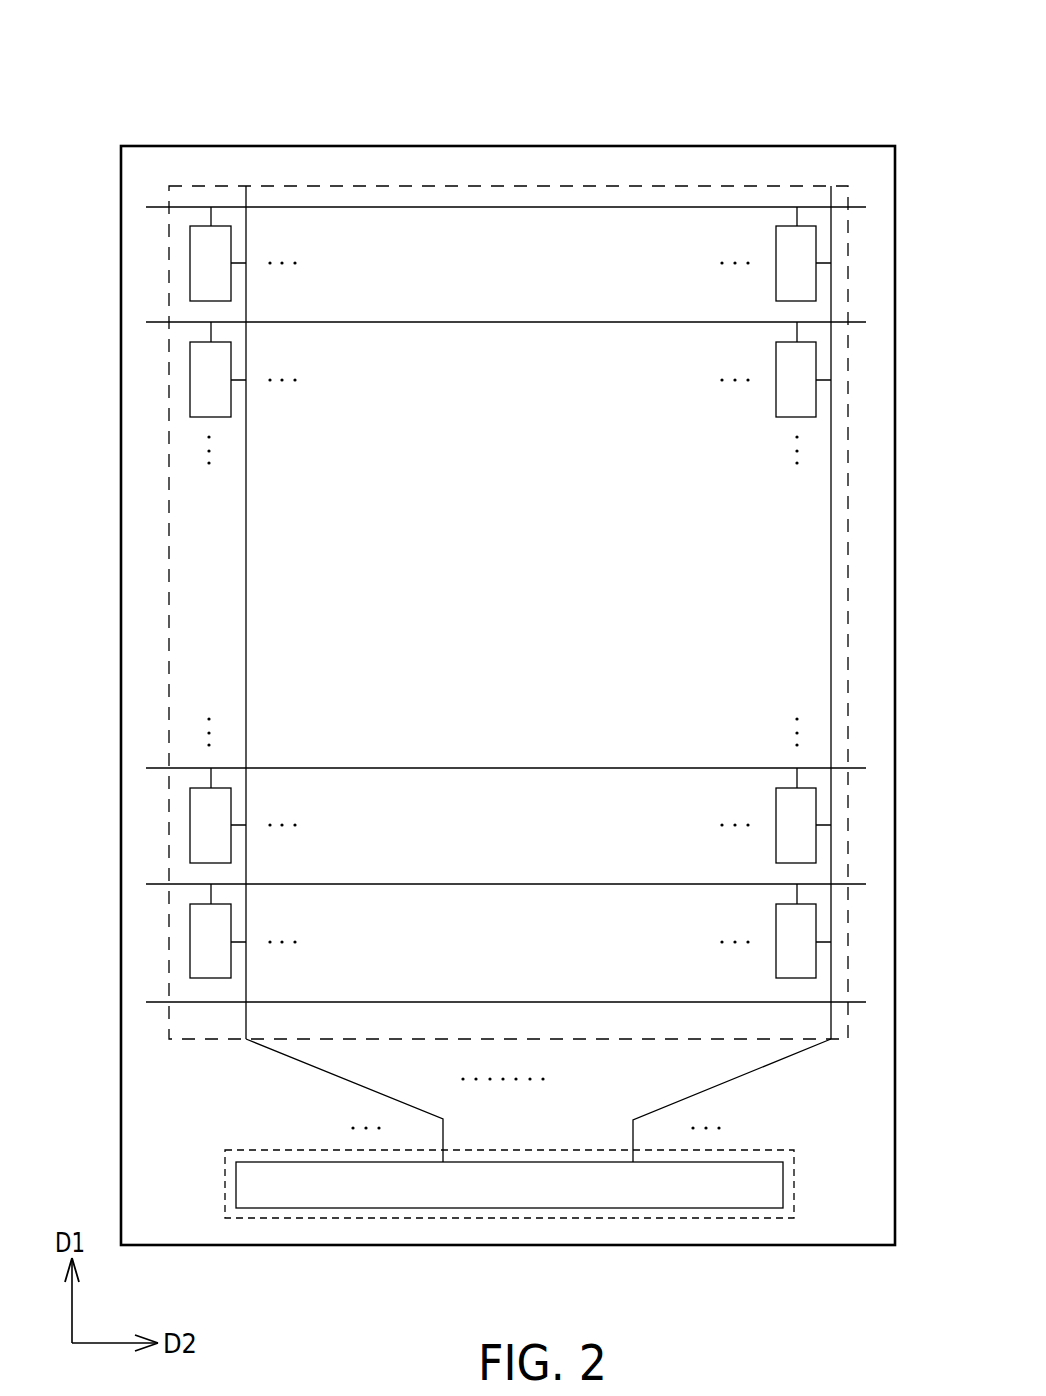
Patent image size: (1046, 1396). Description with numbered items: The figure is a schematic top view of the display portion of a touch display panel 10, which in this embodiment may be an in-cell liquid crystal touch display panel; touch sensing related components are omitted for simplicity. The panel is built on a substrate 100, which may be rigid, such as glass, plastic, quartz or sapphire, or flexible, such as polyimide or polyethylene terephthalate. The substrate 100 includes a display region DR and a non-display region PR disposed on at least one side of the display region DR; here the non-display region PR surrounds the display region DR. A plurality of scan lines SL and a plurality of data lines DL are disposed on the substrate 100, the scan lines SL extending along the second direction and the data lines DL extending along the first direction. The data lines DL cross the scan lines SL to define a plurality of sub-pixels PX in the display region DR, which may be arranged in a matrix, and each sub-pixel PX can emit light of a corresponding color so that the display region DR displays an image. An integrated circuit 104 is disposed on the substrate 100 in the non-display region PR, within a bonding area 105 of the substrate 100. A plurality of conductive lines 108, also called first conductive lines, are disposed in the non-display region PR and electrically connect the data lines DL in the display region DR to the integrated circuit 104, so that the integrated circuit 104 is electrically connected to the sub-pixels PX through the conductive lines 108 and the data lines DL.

The touch display panel 10 is at (803, 67).
The substrate 100 is at (881, 146).
The display region DR is at (463, 225).
The non-display region PR is at (361, 167).
The scan lines SL is at (157, 207).
The data lines DL is at (247, 233).
The sub-pixels PX is at (205, 382).
The conductive lines 108 is at (289, 1058).
The integrated circuit 104 is at (530, 1195).
The bonding area 105 is at (767, 1150).